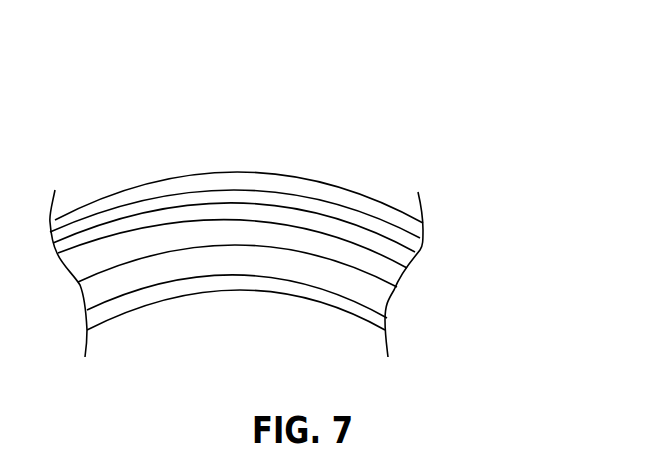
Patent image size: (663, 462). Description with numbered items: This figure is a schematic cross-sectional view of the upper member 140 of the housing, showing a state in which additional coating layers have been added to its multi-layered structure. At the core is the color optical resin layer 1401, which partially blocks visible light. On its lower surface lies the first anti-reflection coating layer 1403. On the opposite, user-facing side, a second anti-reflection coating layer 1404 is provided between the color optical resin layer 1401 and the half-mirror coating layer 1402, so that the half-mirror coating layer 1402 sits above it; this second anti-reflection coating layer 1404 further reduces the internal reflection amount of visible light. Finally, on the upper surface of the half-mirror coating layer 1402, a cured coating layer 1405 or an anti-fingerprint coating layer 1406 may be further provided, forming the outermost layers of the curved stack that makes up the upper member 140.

The upper member 140 is at (428, 137).
The color optical resin layer 1401 is at (367, 285).
The half-mirror coating layer 1402 is at (403, 253).
The first anti-reflection coating layer 1403 is at (390, 313).
The second anti-reflection coating layer 1404 is at (391, 271).
The cured coating layer 1405 is at (317, 207).
The anti-fingerprint coating layer 1406 is at (229, 182).